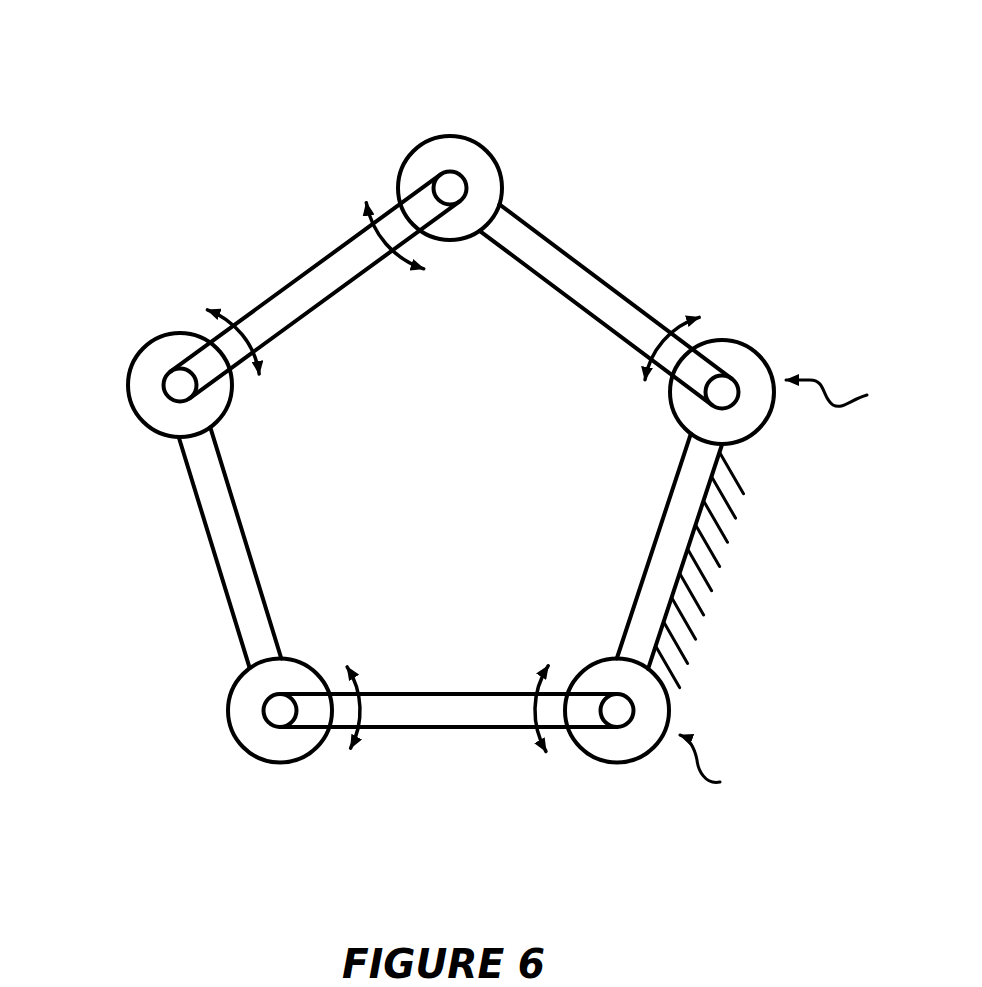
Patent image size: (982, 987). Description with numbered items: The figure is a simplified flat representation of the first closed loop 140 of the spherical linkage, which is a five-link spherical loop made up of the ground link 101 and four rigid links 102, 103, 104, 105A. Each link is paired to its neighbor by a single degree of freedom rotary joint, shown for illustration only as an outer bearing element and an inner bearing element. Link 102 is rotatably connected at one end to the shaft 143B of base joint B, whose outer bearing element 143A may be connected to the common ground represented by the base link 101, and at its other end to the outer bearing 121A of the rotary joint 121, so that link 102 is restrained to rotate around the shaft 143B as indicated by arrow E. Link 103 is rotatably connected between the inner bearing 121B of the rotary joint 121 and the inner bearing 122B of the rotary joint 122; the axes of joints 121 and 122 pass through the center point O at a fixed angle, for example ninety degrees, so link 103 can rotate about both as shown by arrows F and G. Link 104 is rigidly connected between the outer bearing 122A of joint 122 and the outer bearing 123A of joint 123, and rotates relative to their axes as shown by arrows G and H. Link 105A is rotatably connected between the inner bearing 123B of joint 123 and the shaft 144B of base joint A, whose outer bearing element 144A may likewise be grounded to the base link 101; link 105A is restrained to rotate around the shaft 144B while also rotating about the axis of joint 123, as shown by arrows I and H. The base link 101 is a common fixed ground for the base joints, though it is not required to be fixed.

The first closed loop 140 is at (480, 42).
The ground link 101 is at (688, 580).
The link 102 is at (610, 303).
The link 103 is at (300, 293).
The link 104 is at (213, 543).
The link 105A is at (447, 713).
The rotary joint 121 is at (467, 136).
The outer bearing 121A is at (503, 180).
The inner bearing 121B is at (447, 170).
The rotary joint 122 is at (116, 385).
The outer bearing 122A is at (130, 368).
The inner bearing 122B is at (167, 433).
The rotary joint 123 is at (234, 756).
The outer bearing 123A is at (230, 715).
The inner bearing 123B is at (285, 727).
The outer bearing element of base joint B 143A is at (753, 432).
The shaft 143B is at (763, 362).
The outer bearing element of base joint A 144A is at (668, 715).
The shaft 144B is at (615, 728).